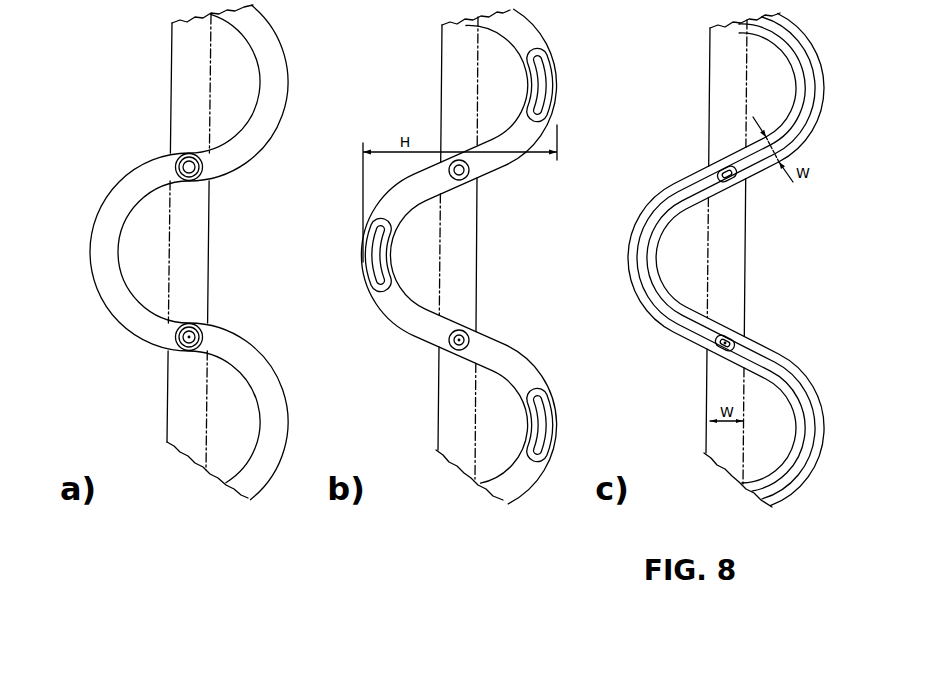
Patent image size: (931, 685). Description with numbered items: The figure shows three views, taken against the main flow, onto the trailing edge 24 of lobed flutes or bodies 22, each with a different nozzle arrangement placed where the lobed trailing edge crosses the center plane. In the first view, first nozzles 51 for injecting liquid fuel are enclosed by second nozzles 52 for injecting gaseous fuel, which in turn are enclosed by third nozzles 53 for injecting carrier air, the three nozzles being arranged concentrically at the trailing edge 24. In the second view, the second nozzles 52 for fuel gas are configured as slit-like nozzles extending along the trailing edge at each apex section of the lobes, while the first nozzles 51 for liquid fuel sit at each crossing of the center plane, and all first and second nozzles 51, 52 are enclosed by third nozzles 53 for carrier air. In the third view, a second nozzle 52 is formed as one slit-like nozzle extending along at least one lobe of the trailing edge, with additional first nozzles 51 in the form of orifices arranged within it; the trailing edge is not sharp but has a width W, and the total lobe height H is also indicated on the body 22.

The body 22 is at (196, 78).
The trailing edge 24 is at (122, 303).
The first nozzles 51 is at (208, 321).
The second nozzles 52 is at (203, 332).
The third nozzles 53 is at (200, 340).